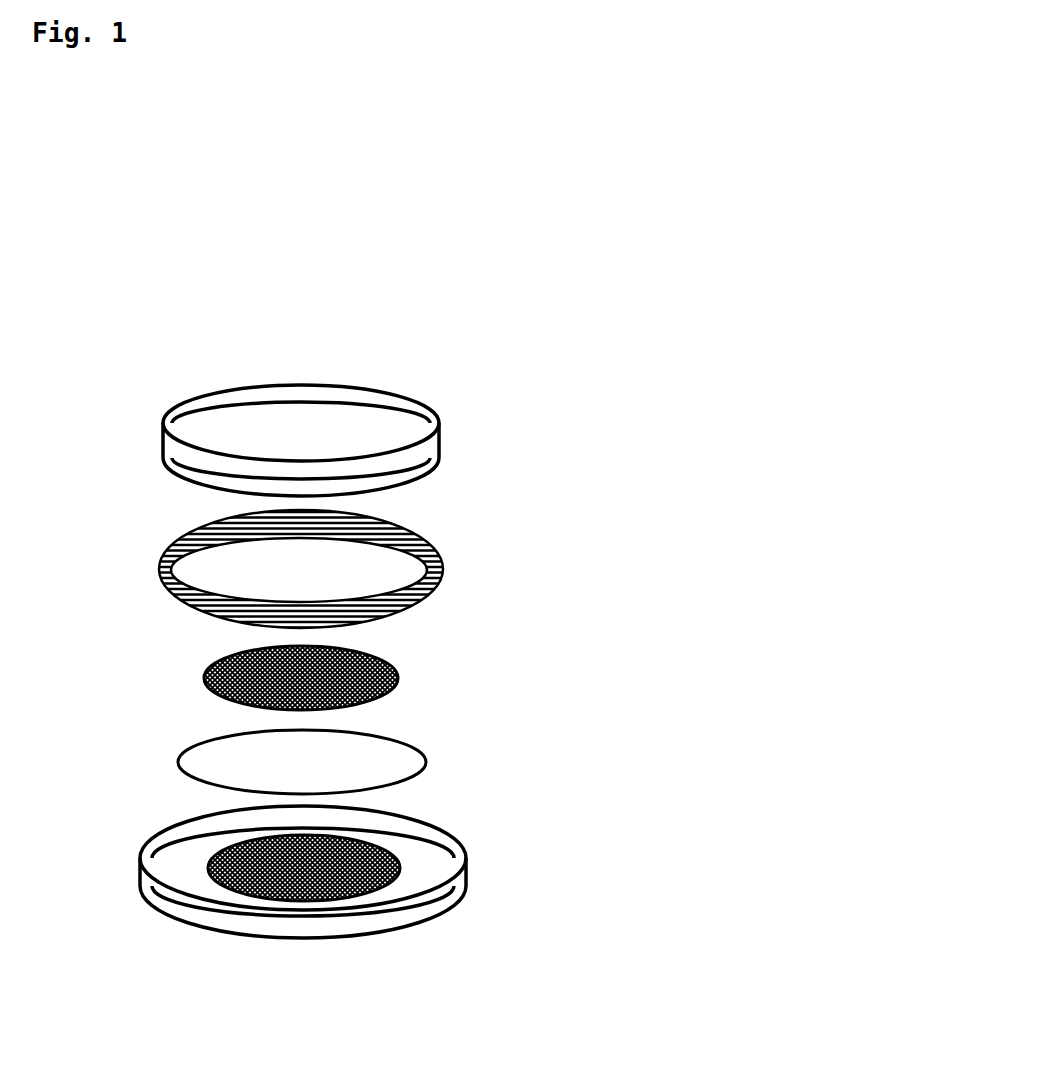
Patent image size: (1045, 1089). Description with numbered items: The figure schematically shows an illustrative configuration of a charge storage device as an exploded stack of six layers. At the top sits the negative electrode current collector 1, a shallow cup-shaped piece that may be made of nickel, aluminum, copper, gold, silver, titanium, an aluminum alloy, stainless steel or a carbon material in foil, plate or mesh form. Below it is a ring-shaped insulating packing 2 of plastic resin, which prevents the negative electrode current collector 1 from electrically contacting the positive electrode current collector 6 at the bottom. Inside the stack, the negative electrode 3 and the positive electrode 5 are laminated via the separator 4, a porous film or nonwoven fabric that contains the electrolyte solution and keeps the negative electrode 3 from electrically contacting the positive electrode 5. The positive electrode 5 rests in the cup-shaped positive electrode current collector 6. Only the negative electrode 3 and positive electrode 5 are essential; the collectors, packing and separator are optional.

The negative electrode current collector 1 is at (472, 447).
The insulating packing 2 is at (472, 563).
The negative electrode 3 is at (427, 678).
The separator 4 is at (437, 755).
The positive electrode 5 is at (405, 845).
The positive electrode current collector 6 is at (475, 917).